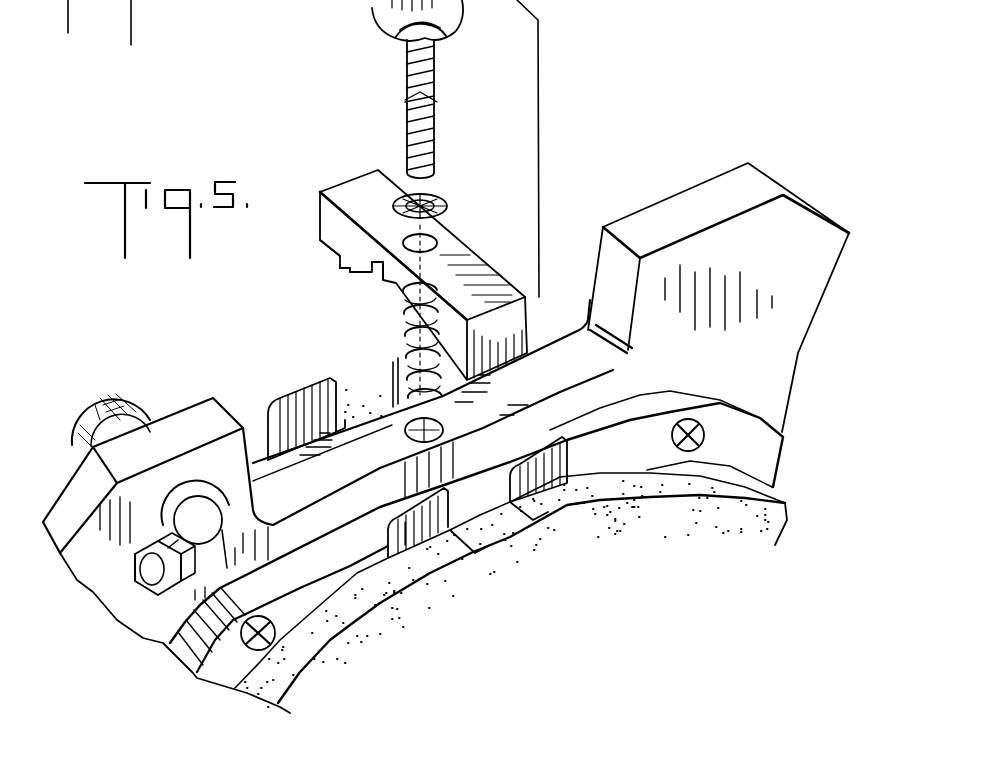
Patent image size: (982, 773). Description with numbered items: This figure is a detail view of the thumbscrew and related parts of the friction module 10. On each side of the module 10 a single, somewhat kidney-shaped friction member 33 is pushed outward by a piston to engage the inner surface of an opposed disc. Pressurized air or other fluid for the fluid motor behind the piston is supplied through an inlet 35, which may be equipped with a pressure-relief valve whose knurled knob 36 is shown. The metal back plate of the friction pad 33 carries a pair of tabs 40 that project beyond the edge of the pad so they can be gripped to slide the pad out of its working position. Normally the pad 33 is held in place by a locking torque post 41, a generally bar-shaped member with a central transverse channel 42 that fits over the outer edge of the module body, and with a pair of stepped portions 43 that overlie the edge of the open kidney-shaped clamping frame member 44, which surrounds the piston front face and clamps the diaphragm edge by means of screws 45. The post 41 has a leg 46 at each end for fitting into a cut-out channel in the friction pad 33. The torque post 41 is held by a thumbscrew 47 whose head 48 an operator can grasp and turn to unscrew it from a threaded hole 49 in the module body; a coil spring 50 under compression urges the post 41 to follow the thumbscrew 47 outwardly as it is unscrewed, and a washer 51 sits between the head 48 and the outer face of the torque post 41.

The friction module 10 is at (692, 160).
The friction member 33 is at (752, 512).
The inlet 35 is at (182, 526).
The knurled knob 36 is at (128, 408).
The tabs 40 is at (316, 402).
The locking torque post 41 is at (343, 190).
The central transverse channel 42 is at (390, 285).
The stepped portions 43 is at (358, 272).
The clamping frame member 44 is at (660, 398).
The screws 45 is at (700, 425).
The leg 46 is at (325, 252).
The thumbscrew 47 is at (410, 95).
The head 48 is at (385, 24).
The threaded hole 49 is at (405, 436).
The coil spring 50 is at (405, 348).
The washer 51 is at (447, 202).